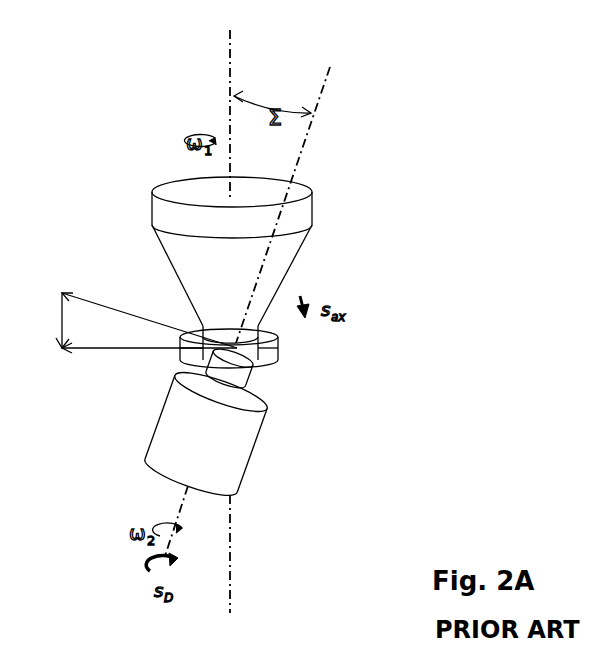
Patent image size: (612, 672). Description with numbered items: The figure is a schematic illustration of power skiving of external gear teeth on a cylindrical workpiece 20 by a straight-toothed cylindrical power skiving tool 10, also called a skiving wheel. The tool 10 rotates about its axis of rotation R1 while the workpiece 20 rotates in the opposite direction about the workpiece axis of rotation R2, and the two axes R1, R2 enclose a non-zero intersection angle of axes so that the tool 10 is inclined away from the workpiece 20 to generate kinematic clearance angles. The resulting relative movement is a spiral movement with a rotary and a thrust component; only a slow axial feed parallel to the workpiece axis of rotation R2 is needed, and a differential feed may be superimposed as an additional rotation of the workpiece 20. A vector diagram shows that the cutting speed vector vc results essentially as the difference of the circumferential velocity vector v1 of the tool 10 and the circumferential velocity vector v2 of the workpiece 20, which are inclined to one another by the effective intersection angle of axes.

The power skiving tool 10 is at (278, 350).
The workpiece 20 is at (183, 358).
The axis of rotation of the power skiving tool R1 is at (237, 307).
The workpiece axis of rotation R2 is at (264, 300).
The velocity vector on the circumference of the tool v1 is at (94, 357).
The velocity vector on the circumference of the workpiece v2 is at (124, 297).
The cutting speed vector vc is at (45, 315).